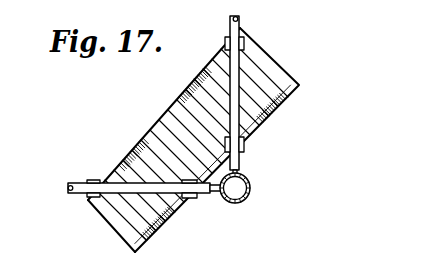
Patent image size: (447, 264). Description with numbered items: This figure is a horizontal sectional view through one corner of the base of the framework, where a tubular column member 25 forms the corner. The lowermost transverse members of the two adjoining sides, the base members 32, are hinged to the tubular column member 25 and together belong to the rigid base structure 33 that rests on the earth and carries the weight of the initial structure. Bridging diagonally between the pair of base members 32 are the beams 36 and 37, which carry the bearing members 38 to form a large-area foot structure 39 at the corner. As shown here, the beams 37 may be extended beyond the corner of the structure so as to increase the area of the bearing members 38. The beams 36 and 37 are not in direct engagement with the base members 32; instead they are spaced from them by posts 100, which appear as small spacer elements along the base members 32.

The tubular column member 25 is at (250, 190).
The base member 32 is at (241, 19).
The base structure 33 is at (115, 196).
The beam 36 is at (178, 103).
The beam 37 is at (173, 209).
The bearing member 38 is at (265, 61).
The foot structure 39 is at (284, 107).
The post 100 is at (225, 43).